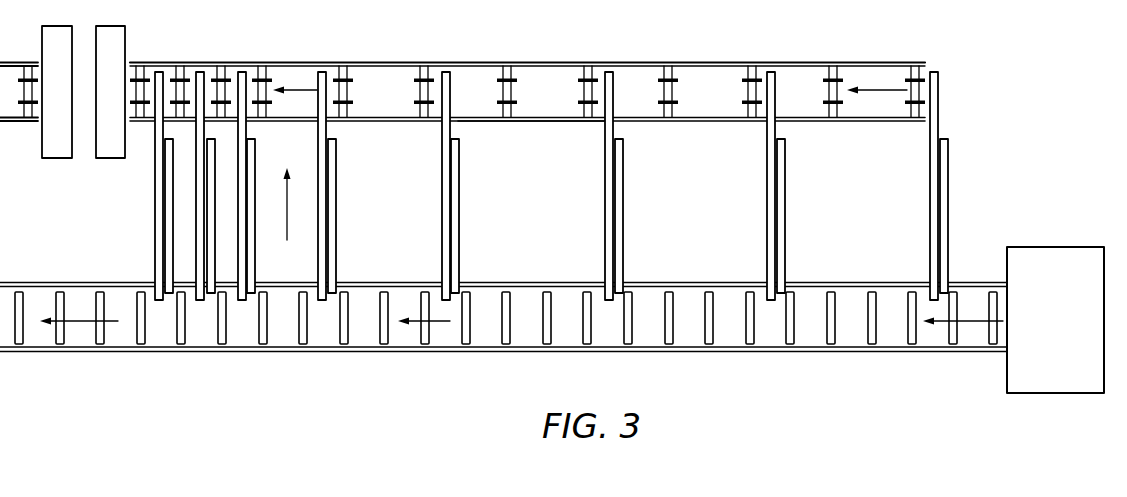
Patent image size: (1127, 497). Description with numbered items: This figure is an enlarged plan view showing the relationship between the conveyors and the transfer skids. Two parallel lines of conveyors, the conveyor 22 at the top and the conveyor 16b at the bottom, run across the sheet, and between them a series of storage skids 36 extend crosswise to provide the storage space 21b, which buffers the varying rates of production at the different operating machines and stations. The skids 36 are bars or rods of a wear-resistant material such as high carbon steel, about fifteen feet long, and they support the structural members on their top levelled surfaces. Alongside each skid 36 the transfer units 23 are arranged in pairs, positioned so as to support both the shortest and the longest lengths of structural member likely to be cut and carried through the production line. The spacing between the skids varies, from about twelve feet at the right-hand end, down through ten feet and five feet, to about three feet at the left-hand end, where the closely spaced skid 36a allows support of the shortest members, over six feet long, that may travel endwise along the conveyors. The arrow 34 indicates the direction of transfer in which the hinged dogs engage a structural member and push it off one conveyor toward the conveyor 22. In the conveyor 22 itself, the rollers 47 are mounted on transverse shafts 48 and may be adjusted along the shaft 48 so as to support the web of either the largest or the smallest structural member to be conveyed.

The conveyor 16b is at (603, 342).
The storage space 21b is at (558, 218).
The conveyor 22 is at (713, 62).
The transfer unit 23 is at (255, 243).
The arrow indicating direction of transfer 34 is at (288, 208).
The skid 36 is at (318, 200).
The skid 36a is at (238, 207).
The roller 47 is at (578, 102).
The shaft 48 is at (580, 70).